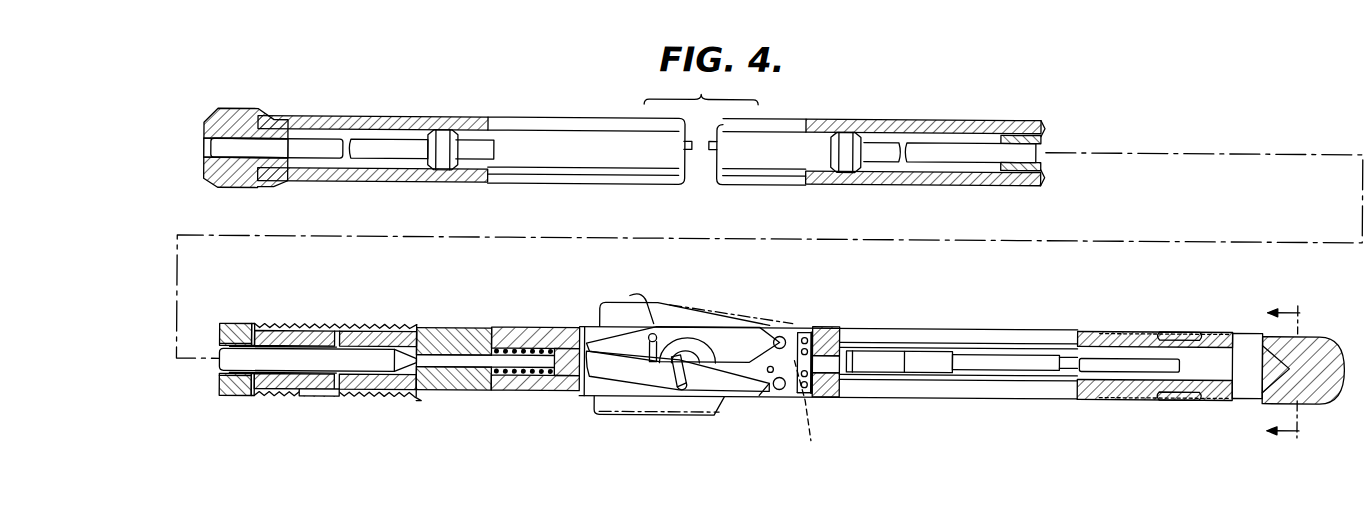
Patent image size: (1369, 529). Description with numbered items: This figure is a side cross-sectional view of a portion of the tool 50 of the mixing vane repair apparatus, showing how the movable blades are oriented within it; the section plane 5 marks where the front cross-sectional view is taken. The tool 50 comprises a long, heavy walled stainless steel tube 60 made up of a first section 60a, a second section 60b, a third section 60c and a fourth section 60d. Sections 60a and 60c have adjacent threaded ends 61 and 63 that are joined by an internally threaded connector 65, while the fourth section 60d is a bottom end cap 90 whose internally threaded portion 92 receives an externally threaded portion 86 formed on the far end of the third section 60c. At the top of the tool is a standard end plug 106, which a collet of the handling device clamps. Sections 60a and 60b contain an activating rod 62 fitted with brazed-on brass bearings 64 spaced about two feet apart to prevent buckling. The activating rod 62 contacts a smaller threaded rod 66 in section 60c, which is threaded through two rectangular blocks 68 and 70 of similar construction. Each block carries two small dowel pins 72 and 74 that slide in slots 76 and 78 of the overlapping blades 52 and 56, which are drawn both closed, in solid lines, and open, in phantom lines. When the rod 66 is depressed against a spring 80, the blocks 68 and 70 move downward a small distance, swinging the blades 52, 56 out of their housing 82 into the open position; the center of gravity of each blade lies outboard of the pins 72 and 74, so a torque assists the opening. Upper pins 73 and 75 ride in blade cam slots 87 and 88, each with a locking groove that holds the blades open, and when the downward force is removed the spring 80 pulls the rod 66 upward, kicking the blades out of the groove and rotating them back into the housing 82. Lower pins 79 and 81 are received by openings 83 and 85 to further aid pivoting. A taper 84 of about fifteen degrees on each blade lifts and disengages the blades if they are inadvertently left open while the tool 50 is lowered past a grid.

The tool 50 is at (1201, 121).
The blade 52 is at (670, 340).
The blade 56 is at (720, 386).
The tube 60 is at (771, 126).
The first section 60a is at (556, 114).
The second section 60b is at (352, 308).
The third section 60c is at (868, 300).
The fourth section 60d is at (1318, 312).
The threaded end 61 is at (288, 394).
The activating rod 62 is at (363, 146).
The threaded end 63 is at (452, 339).
The brass bearings 64 is at (440, 141).
The internally threaded connector 65 is at (333, 393).
The smaller rod 66 is at (513, 363).
The rectangular block 68 is at (832, 338).
The rectangular block 70 is at (806, 409).
The dowel pin 72 is at (781, 337).
The upper pin 73 is at (632, 314).
The dowel pin 74 is at (766, 390).
The upper pin 75 is at (679, 392).
The slot 76 is at (804, 331).
The slot 78 is at (780, 390).
The lower pin 79 is at (814, 345).
The spring 80 is at (505, 394).
The lower pin 81 is at (806, 392).
The housing 82 is at (628, 430).
The opening 83 is at (768, 374).
The taper 84 is at (735, 310).
The opening 85 is at (848, 385).
The externally threaded portion 86 is at (1215, 401).
The blade cam slot 87 is at (652, 333).
The blade cam slot 88 is at (688, 400).
The bottom end cap 90 is at (1315, 350).
The internally threaded portion 92 is at (1205, 333).
The end plug 106 is at (207, 180).
The section line 5- 5 is at (1279, 370).